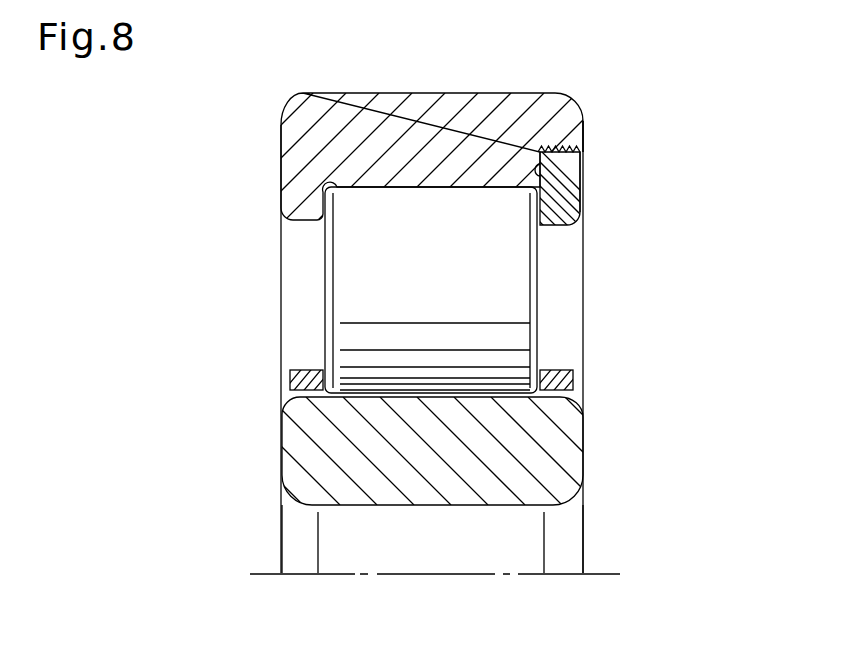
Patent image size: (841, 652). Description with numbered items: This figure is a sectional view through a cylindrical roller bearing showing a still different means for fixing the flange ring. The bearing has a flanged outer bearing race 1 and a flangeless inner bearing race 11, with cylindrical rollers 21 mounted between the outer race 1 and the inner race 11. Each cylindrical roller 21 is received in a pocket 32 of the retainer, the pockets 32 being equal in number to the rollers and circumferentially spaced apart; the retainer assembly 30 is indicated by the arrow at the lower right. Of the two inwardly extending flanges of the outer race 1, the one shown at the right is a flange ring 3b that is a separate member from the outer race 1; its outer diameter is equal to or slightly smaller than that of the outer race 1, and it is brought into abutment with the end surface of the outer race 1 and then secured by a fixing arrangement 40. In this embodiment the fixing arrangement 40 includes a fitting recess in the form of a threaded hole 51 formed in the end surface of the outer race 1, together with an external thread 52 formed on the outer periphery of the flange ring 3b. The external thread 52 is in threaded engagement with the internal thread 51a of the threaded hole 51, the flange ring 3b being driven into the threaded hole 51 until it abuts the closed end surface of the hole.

The outer bearing race 1 is at (325, 105).
The threaded hole 51 is at (539, 86).
The internal thread 51a is at (552, 145).
The fixing arrangement 40 is at (582, 130).
The external thread 52 is at (582, 167).
The flange ring 3b is at (573, 200).
The cylindrical roller 21 is at (348, 258).
The pocket 32 is at (537, 362).
The cage 30 is at (496, 353).
The inner bearing race 11 is at (295, 465).